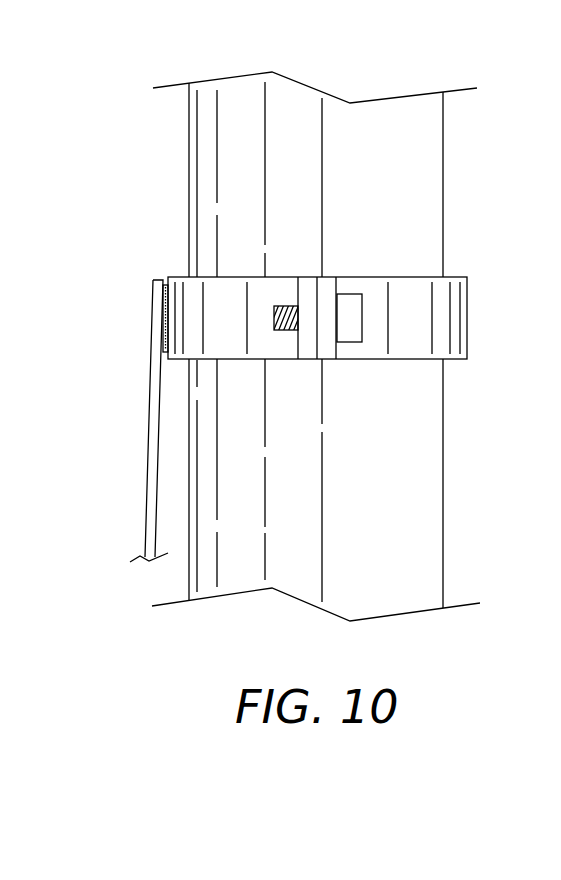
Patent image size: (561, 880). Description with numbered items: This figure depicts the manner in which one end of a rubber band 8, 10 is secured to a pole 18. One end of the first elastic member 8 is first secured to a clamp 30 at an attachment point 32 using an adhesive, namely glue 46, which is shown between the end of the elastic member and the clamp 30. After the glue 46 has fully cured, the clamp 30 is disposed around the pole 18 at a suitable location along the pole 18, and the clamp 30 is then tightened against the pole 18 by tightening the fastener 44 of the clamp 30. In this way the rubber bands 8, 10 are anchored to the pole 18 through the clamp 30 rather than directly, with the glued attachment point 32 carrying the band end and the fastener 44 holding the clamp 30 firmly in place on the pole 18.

The first elastic member 8 is at (112, 421).
The rubber band 10 is at (155, 422).
The pole 18 is at (444, 465).
The clamp 30 is at (349, 290).
The attachment point 32 is at (112, 395).
The fastener 44 is at (348, 294).
The glue 46 is at (166, 283).